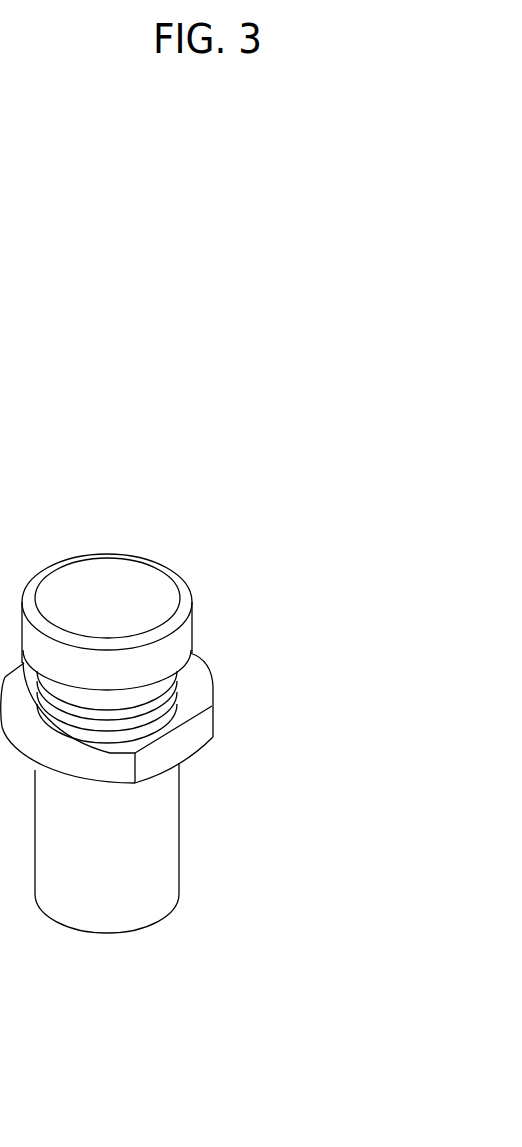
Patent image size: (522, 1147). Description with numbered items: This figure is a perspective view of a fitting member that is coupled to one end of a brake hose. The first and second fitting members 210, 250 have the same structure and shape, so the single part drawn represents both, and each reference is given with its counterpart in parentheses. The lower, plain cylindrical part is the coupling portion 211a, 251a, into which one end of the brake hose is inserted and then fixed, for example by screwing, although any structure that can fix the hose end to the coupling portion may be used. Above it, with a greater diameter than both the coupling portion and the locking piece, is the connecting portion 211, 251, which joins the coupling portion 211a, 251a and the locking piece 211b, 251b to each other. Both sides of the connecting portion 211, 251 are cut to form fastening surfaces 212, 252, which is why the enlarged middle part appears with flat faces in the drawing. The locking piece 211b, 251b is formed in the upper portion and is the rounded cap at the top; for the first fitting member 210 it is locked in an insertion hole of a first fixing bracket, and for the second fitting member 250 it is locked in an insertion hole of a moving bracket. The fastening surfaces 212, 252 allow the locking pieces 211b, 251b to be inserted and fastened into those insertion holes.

The first fitting member 210 is at (219, 644).
The second fitting member 250 is at (123, 379).
The connecting portion 211 is at (229, 737).
The connecting portion 251 is at (203, 688).
The coupling portion 211a is at (236, 848).
The coupling portion 251a is at (180, 838).
The locking piece 211b is at (229, 615).
The locking piece 251b is at (190, 642).
The fastening surface 212 is at (208, 718).
The fastening surface 252 is at (197, 737).